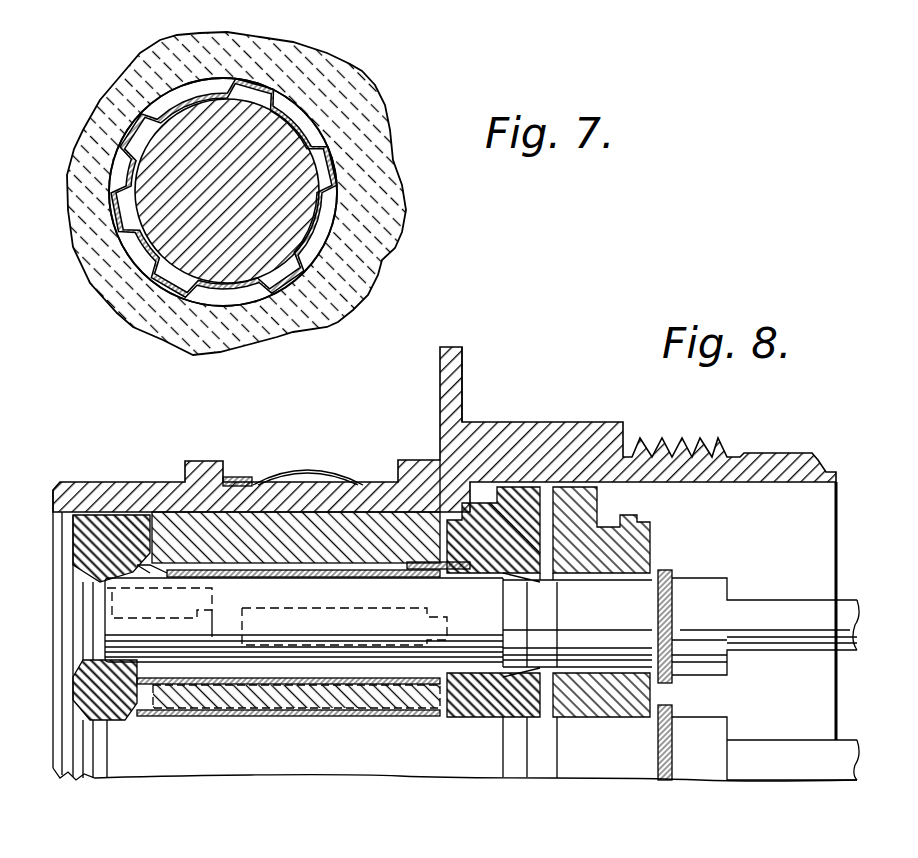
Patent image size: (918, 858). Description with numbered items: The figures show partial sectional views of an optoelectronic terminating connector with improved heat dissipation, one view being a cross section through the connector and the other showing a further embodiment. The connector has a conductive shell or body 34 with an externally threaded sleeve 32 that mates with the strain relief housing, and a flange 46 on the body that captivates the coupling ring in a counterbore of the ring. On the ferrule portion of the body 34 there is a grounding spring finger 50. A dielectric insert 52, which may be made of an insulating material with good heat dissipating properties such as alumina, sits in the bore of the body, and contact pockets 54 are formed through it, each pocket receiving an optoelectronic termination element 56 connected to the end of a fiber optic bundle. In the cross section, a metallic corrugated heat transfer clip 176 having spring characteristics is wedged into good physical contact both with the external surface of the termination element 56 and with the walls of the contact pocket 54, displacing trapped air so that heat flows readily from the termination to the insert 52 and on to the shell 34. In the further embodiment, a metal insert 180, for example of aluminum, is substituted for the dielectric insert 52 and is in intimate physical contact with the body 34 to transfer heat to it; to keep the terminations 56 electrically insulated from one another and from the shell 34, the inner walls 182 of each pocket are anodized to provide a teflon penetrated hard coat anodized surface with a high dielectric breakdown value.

In FIG. 8, the sleeve 32 is at (872, 668).
In FIG. 8, the shell or body 34 is at (112, 488).
In FIG. 8, the flange 46 is at (464, 385).
In FIG. 8, the grounding spring finger 50 is at (318, 480).
In FIG. 7, the dielectric insert 52 is at (125, 103).
In FIG. 8, the dielectric insert 52 is at (387, 562).
In FIG. 7, the contact pocket 54 is at (298, 112).
In FIG. 7, the optoelectronic termination element 56 is at (294, 168).
In FIG. 8, the optoelectronic termination element 56 is at (287, 757).
In FIG. 7, the heat transfer clip 176 is at (205, 92).
In FIG. 8, the heat transfer clip 176 is at (340, 678).
In FIG. 8, the insert 180 is at (248, 513).
In FIG. 8, the inner walls 182 is at (273, 557).